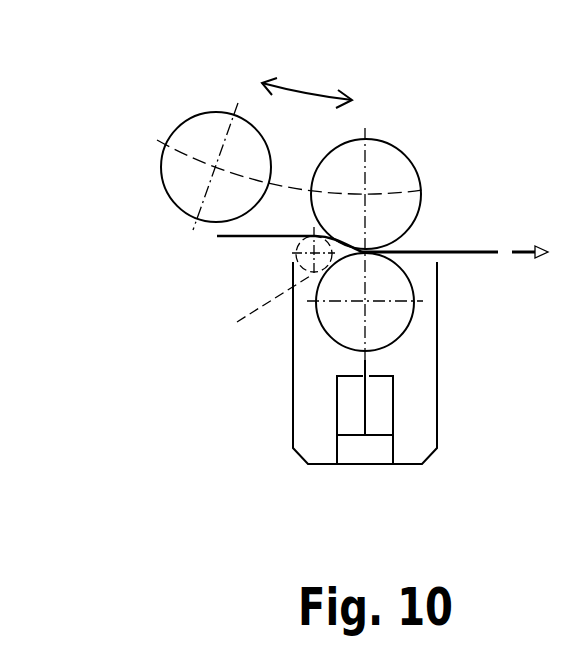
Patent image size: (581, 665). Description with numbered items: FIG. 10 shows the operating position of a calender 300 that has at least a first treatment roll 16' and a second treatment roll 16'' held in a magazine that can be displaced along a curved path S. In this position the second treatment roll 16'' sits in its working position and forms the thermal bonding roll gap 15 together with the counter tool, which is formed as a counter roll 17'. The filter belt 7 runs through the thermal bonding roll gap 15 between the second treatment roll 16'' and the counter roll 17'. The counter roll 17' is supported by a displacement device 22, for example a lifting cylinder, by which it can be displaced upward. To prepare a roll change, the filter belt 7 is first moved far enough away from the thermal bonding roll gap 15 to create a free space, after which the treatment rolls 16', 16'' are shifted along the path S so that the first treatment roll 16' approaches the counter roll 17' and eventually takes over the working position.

The calender 300 is at (142, 92).
The first treatment roll 16' is at (216, 128).
The second treatment roll 16'' is at (395, 198).
The counter roll 17' is at (402, 320).
The path S is at (297, 190).
The filter belt 7 is at (263, 307).
The thermal bonding roll gap 15 is at (458, 267).
The displacement device 22 is at (377, 420).